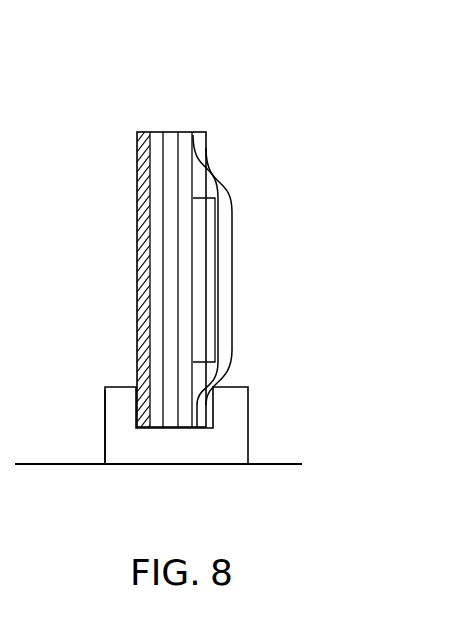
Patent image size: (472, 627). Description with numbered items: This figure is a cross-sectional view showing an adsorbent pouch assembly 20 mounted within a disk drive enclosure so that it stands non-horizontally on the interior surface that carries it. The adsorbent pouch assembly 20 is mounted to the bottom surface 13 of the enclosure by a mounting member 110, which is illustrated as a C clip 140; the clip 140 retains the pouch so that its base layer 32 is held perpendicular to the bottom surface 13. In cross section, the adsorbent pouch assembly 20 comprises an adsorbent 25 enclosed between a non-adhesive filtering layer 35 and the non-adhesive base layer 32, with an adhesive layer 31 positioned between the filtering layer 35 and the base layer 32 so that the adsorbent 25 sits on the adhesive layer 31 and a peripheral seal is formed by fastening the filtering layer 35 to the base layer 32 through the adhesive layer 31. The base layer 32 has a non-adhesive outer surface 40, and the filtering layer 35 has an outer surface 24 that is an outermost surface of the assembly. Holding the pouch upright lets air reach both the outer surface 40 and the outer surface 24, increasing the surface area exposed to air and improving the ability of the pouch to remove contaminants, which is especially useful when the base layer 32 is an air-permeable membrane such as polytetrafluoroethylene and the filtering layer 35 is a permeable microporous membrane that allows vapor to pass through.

The adsorbent pouch assembly 20 is at (218, 112).
The outer surface 24 is at (232, 342).
The adsorbent 25 is at (205, 198).
The adhesive layer 31 is at (148, 130).
The base layer 32 is at (138, 135).
The filtering layer 35 is at (233, 216).
The outer surface 40 is at (137, 163).
The mounting member 110 is at (105, 387).
The C clip 140 is at (105, 408).
The bottom surface 13 is at (267, 463).